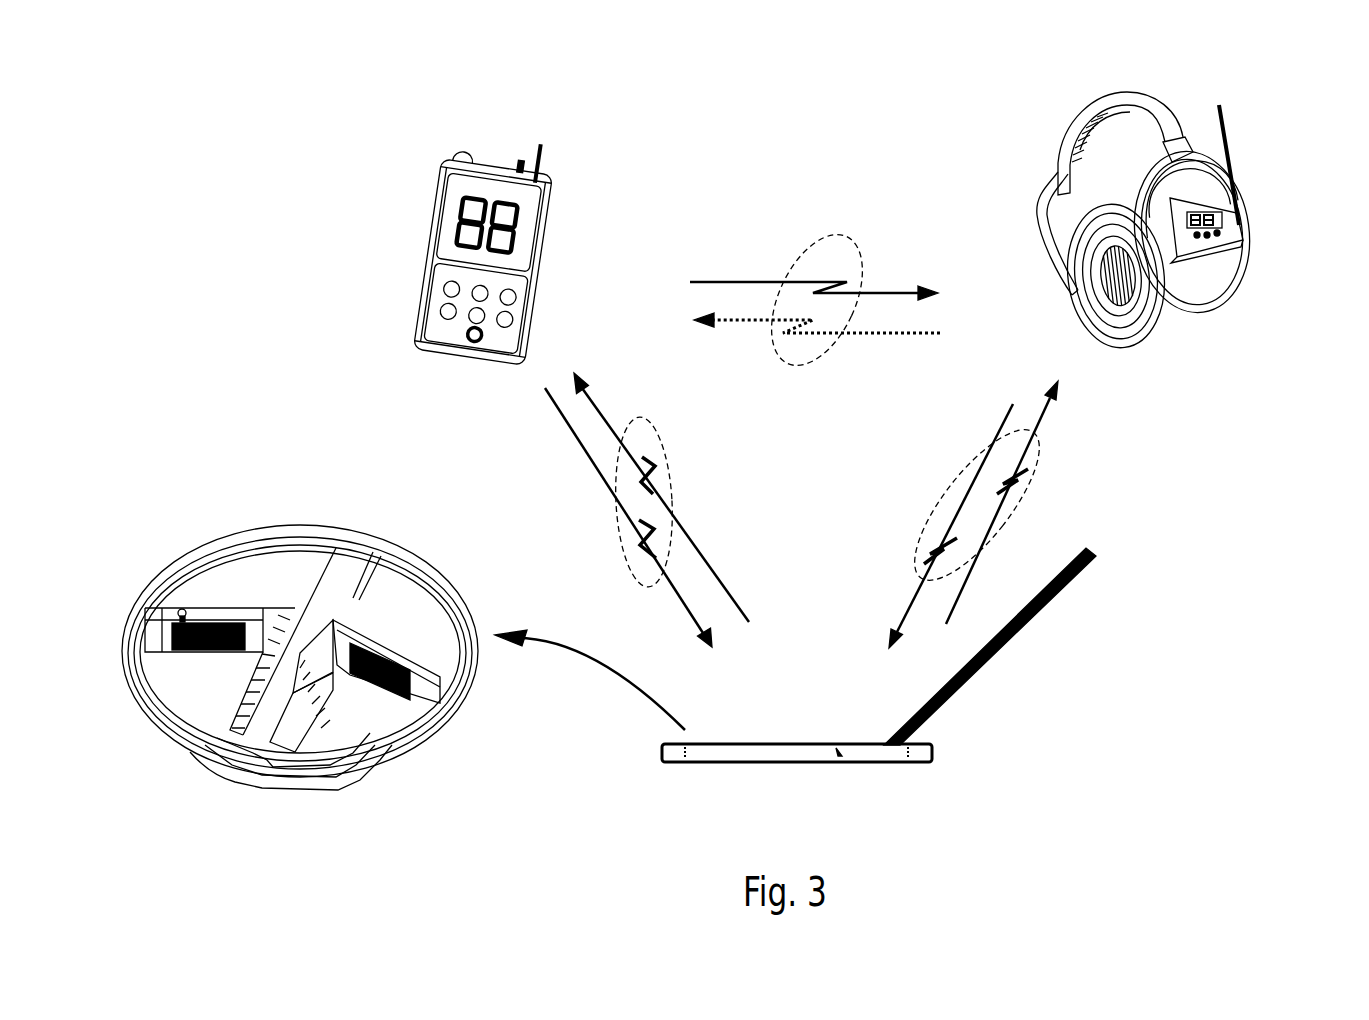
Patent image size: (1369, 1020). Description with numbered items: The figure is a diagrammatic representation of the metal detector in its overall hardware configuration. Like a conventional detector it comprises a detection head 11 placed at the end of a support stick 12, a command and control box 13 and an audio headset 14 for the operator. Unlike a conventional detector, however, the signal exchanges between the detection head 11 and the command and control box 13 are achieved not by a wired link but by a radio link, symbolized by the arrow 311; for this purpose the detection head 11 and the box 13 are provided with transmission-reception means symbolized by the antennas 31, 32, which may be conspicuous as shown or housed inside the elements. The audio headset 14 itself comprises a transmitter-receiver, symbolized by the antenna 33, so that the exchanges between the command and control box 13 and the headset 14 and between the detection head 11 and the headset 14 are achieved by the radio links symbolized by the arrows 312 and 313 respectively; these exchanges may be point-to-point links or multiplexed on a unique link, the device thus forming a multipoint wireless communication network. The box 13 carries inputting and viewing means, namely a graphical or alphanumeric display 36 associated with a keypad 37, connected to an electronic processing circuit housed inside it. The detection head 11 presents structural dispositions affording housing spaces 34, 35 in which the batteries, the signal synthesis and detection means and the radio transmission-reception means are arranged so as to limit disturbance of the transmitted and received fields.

The detection head 11 is at (526, 663).
The support stick 12 is at (1010, 640).
The command and control box 13 is at (491, 246).
The audio headset 14 is at (1200, 208).
The antenna of the detection head 31 is at (180, 610).
The antenna of the command and control box 32 is at (545, 141).
The antenna of the audio headset 33 is at (1231, 146).
The housing space 34 is at (212, 652).
The housing space 35 is at (372, 686).
The display 36 is at (480, 183).
The keypad 37 is at (491, 333).
The radio link between detection head and command and control box 311 is at (673, 468).
The radio link between command and control box and audio headset 312 is at (847, 237).
The radio link between detection head and audio headset 313 is at (1035, 480).